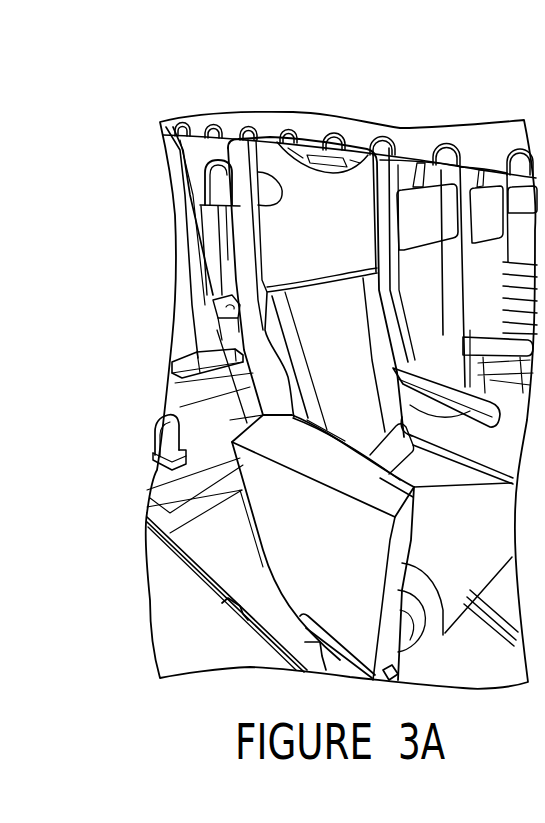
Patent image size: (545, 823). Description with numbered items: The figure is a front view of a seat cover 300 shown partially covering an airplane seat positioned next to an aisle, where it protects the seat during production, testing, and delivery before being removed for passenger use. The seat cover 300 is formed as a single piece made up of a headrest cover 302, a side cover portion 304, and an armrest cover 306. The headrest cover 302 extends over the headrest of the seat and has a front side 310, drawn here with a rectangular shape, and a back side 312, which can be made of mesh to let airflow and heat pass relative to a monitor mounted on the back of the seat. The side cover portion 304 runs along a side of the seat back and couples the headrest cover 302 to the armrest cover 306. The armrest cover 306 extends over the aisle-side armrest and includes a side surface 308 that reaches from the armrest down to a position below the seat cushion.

The seat cover 300 is at (380, 107).
The headrest cover 302 is at (296, 271).
The side cover portion 304 is at (187, 275).
The armrest cover 306 is at (250, 438).
The side surface 308 is at (317, 557).
The front side 310 is at (287, 263).
The back side 312 is at (222, 177).